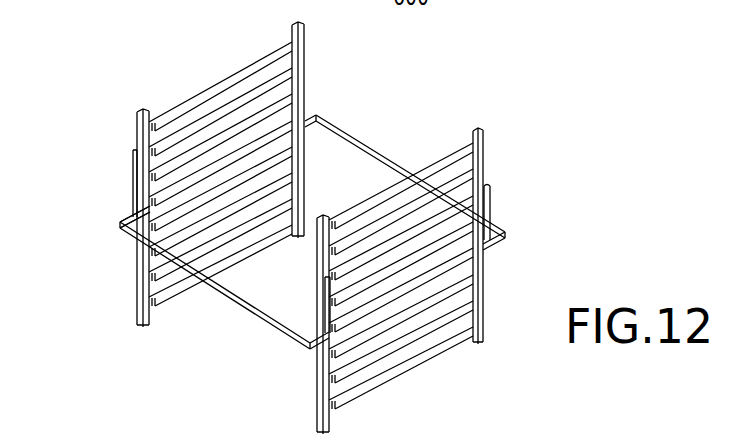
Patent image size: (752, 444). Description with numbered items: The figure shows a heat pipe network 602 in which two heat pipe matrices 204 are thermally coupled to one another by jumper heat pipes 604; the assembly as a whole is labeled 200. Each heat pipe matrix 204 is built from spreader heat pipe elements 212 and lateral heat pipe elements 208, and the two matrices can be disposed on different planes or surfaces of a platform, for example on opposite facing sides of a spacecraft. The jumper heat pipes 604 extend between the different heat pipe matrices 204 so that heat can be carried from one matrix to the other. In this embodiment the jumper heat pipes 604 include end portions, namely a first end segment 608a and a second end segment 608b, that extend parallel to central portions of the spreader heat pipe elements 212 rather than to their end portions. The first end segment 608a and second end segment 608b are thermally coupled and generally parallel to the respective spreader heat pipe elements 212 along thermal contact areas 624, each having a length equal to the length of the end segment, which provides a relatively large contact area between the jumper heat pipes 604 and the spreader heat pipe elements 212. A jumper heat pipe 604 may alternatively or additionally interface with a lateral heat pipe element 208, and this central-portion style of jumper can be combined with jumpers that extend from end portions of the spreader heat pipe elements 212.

The rack assembly 200 is at (110, 266).
The heat pipe network 602 is at (162, 23).
The heat pipe matrix 204 is at (225, 82).
The lateral heat pipe element 208 is at (173, 313).
The spreader heat pipe element 212 is at (487, 148).
The jumper heat pipe 604 is at (362, 137).
The first end segment 608a is at (136, 212).
The second end segment 608b is at (490, 208).
The thermal contact area 624 is at (134, 158).